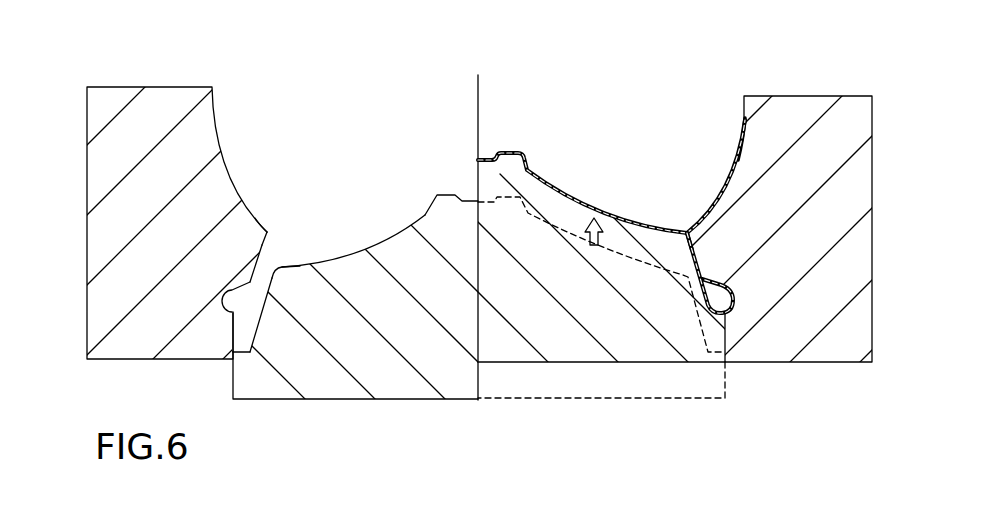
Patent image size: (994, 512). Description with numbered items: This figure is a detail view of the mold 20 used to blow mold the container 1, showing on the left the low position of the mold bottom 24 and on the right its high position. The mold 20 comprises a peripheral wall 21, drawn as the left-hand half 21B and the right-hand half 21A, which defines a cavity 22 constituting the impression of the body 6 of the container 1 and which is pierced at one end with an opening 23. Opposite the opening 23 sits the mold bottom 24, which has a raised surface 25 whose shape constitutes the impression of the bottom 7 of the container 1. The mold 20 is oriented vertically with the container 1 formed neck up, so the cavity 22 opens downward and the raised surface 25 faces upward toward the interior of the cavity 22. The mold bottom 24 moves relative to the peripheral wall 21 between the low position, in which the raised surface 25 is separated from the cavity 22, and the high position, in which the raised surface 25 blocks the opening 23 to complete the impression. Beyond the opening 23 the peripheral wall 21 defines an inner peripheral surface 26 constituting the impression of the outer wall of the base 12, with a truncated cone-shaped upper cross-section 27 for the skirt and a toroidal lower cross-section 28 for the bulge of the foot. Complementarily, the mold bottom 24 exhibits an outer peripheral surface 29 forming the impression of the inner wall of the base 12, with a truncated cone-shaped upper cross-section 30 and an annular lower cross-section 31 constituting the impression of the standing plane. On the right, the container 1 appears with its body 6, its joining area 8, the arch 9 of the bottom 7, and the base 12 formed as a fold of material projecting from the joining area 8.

The container 1 is at (730, 116).
The body 6 is at (733, 163).
The bottom 7 is at (580, 199).
The joining area 8 is at (702, 230).
The arch 9 is at (582, 193).
The base 12 is at (719, 262).
The mold 20 is at (77, 111).
The peripheral wall 21 is at (160, 110).
The peripheral wall 21A is at (797, 236).
The peripheral wall 21B is at (790, 118).
The cavity 22 is at (353, 132).
The opening 23 is at (277, 225).
The mold bottom 24 is at (392, 389).
The raised surface 25 is at (389, 223).
The inner peripheral surface 26 is at (276, 240).
The truncated cone-shaped upper cross-section 27 is at (256, 262).
The toroidal lower cross-section 28 is at (228, 294).
The outer peripheral surface 29 is at (289, 285).
The truncated cone-shaped upper cross-section 30 is at (263, 312).
The annular lower cross-section 31 is at (239, 353).